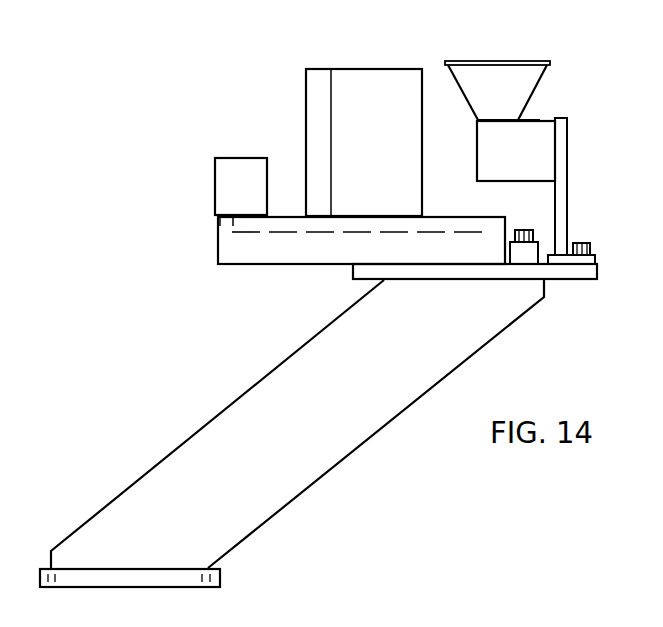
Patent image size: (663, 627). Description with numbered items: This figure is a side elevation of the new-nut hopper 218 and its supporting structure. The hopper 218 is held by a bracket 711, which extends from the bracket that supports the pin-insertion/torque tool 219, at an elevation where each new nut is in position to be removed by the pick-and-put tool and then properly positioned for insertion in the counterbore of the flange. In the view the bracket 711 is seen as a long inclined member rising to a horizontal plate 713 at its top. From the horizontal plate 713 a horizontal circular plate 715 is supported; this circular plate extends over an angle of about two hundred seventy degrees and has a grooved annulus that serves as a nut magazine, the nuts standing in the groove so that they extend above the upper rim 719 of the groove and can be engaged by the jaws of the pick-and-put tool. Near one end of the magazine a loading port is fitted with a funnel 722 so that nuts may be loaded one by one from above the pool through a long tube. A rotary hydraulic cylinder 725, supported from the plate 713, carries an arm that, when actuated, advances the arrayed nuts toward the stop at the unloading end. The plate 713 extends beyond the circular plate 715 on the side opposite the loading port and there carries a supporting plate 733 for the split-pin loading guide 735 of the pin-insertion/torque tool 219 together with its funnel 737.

The bracket 711 is at (452, 344).
The horizontal plate 713 is at (580, 272).
The horizontal circular plate 715 is at (216, 250).
The upper rim 719 is at (479, 216).
The funnel 722 is at (232, 172).
The rotary hydraulic cylinder 725 is at (312, 105).
The supporting plate 733 is at (562, 200).
The split-pin loading guide 735 is at (544, 115).
The funnel 737 is at (536, 61).
The new-nut hopper 218 is at (313, 307).
The pin-insertion/torque tool 219 is at (613, 157).